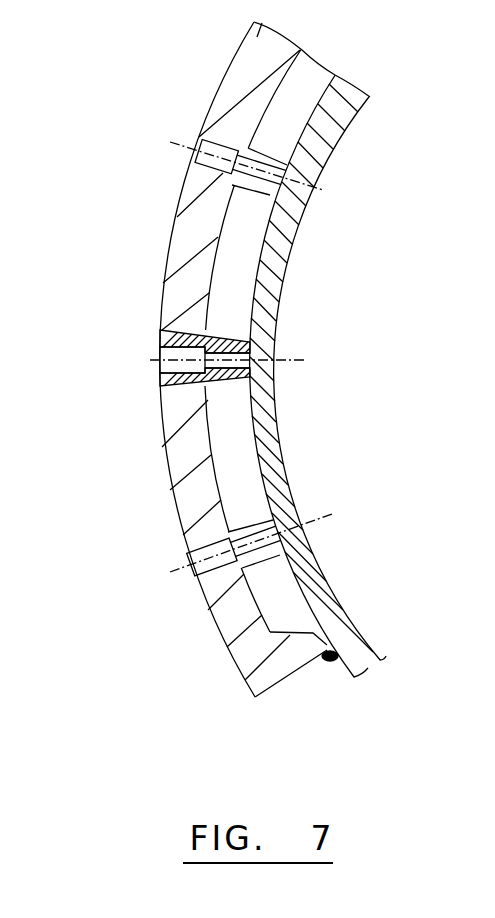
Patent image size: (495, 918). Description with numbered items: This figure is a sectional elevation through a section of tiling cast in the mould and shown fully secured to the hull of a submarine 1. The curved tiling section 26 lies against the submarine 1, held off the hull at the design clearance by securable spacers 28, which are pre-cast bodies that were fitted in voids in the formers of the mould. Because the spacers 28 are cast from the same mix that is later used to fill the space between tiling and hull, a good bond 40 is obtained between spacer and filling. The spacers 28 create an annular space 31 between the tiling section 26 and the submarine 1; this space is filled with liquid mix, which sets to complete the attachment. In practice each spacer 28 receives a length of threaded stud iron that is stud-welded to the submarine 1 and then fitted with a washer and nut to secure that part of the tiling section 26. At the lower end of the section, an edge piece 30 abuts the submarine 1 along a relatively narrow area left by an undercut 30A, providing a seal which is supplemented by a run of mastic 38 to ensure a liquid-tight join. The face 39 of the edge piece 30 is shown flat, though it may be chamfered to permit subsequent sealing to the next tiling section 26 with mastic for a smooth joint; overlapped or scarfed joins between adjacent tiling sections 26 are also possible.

The submarine 1 is at (322, 138).
The tiling section 26 is at (190, 240).
The securable spacer 28 is at (247, 340).
The annular space 31 is at (232, 433).
The bond 40 is at (175, 398).
The edge piece 30 is at (298, 653).
The undercut 30A is at (330, 652).
The run of mastic 38 is at (345, 650).
The face 39 is at (288, 677).